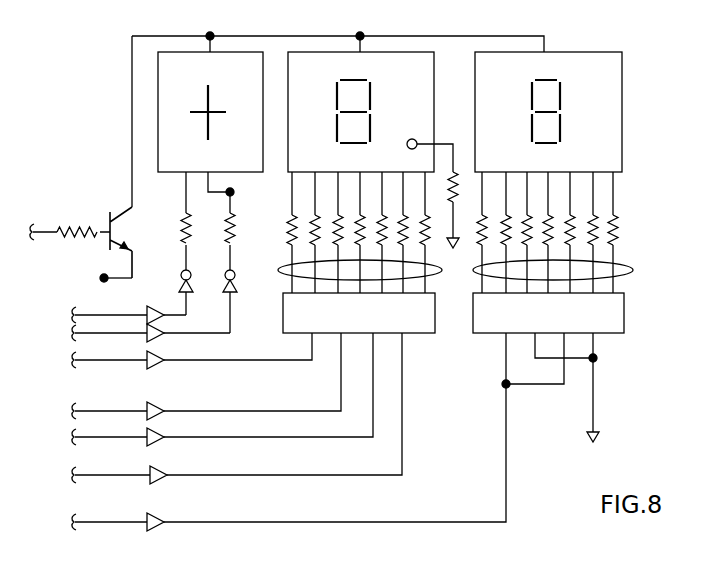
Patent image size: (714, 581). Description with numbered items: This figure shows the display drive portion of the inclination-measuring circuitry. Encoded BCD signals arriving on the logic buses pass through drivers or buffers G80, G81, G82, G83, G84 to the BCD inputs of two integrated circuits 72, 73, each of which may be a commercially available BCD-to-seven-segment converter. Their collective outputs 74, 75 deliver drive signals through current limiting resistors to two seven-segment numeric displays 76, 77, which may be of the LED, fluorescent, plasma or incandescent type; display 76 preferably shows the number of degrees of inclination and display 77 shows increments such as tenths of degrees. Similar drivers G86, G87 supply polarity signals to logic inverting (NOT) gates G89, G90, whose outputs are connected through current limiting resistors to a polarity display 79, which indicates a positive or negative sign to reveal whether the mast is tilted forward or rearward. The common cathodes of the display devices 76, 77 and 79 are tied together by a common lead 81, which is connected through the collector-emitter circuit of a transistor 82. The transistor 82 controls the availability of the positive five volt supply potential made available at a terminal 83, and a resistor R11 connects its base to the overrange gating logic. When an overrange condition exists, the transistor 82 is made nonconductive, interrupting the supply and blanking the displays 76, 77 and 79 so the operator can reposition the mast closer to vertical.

The BCD-to-7-segment converter 72 is at (416, 333).
The BCD-to-7-segment converter 73 is at (615, 333).
The outputs of converter 74 is at (442, 270).
The outputs of converter 75 is at (633, 270).
The 7-segment numeric display 76 is at (382, 52).
The 7-segment numeric display 77 is at (568, 52).
The polarity display 79 is at (238, 52).
The common lead 81 is at (475, 36).
The transistor 82 is at (103, 222).
The terminal 83 is at (101, 273).
The resistor R11 is at (80, 218).
The driver G80 is at (162, 365).
The driver G81 is at (165, 416).
The driver G82 is at (164, 442).
The driver G83 is at (162, 480).
The driver G84 is at (159, 528).
The driver G86 is at (149, 310).
The driver G87 is at (162, 338).
The logic inverting gate G89 is at (180, 280).
The logic inverting gate G90 is at (228, 293).